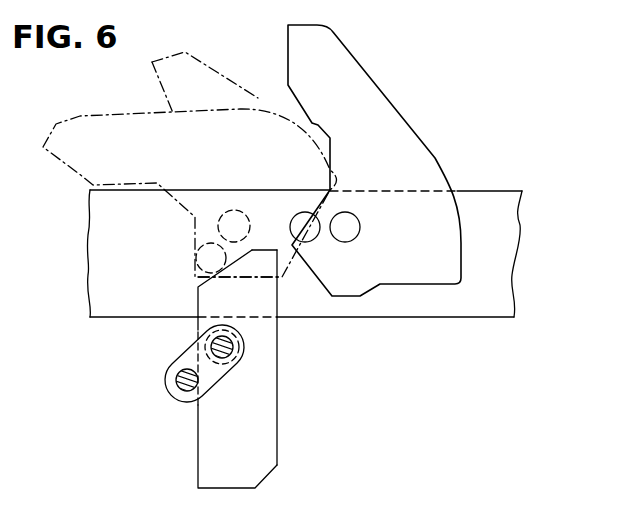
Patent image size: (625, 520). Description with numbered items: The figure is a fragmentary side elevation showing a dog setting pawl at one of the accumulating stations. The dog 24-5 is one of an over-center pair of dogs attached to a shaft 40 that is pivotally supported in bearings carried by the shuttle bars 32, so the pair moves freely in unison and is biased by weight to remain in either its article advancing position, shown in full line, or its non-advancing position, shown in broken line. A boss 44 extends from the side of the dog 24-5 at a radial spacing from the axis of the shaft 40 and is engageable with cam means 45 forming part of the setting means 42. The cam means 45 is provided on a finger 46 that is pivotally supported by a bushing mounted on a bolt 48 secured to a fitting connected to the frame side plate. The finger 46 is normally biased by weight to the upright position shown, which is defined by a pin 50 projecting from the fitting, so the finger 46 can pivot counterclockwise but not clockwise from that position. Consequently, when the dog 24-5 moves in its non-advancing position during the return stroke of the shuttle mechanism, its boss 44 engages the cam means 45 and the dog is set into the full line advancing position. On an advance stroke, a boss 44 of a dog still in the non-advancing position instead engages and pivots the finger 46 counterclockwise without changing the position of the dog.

The dog 24-5 is at (125, 108).
The shuttle bars 32 is at (518, 230).
The shaft 40 is at (360, 223).
The setting means 42 is at (278, 397).
The boss 44 is at (316, 214).
The cam means 45 is at (198, 278).
The finger 46 is at (278, 440).
The bolt 48 is at (233, 343).
The pin 50 is at (176, 388).